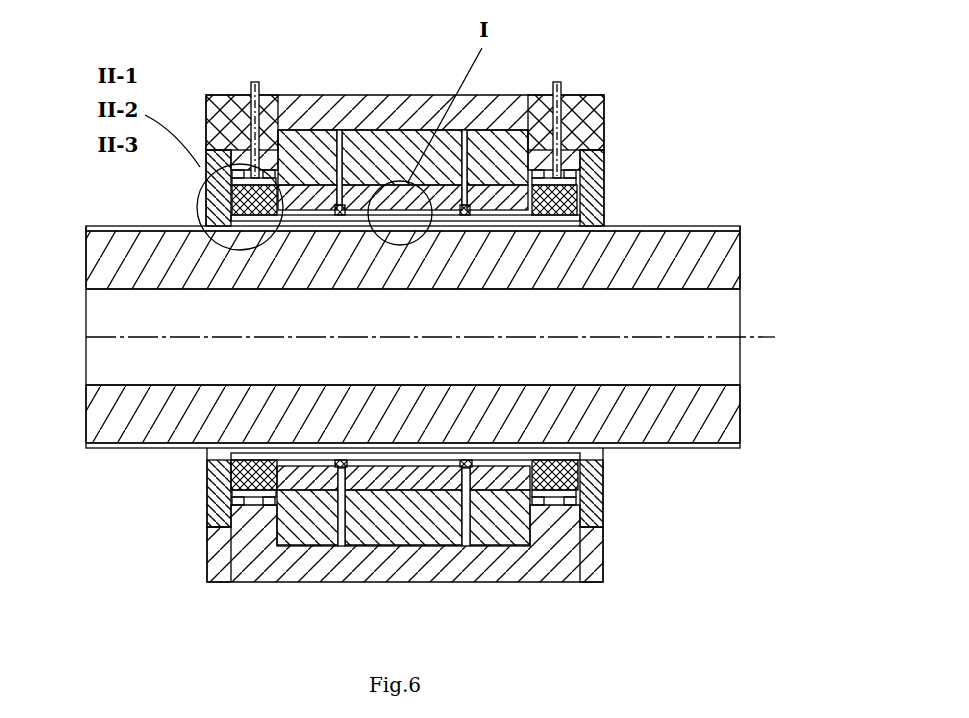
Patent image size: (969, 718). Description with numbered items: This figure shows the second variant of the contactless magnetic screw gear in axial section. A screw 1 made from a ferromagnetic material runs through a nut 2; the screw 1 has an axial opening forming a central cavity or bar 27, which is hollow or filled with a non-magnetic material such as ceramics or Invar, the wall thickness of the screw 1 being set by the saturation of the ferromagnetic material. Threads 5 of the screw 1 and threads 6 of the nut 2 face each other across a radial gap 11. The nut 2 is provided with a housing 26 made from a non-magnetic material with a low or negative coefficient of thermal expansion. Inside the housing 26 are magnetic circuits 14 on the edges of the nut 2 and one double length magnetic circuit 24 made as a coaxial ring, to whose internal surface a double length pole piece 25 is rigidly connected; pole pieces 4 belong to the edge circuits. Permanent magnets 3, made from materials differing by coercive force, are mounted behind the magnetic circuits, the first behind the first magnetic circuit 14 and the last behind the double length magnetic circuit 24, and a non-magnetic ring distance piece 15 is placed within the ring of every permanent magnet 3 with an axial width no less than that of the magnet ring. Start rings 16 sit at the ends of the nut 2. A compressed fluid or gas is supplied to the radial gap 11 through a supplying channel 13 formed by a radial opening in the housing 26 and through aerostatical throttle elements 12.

The screw 1 is at (613, 413).
The nut 2 is at (603, 515).
The permanent magnets 3 is at (328, 132).
The pole pieces 4 is at (312, 468).
The threads of the screw 5 is at (627, 226).
The threads of the nut 6 is at (420, 490).
The radial gap 11 is at (280, 515).
The aerostatical throttle elements 12 is at (205, 557).
The supplying channel 13 is at (215, 95).
The magnetic circuits 14 is at (257, 82).
The non-magnetic ring distance piece 15 is at (335, 470).
The start rings 16 is at (213, 490).
The double length magnetic circuit 24 is at (387, 505).
The double length pole piece 25 is at (380, 173).
The housing 26 is at (353, 112).
The central cavity or bar 27 is at (210, 352).